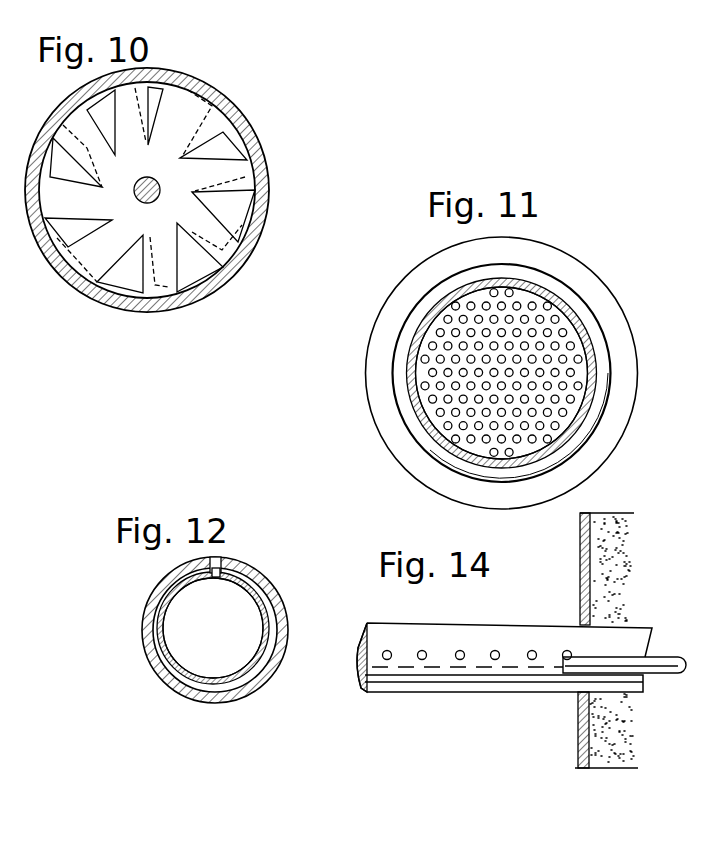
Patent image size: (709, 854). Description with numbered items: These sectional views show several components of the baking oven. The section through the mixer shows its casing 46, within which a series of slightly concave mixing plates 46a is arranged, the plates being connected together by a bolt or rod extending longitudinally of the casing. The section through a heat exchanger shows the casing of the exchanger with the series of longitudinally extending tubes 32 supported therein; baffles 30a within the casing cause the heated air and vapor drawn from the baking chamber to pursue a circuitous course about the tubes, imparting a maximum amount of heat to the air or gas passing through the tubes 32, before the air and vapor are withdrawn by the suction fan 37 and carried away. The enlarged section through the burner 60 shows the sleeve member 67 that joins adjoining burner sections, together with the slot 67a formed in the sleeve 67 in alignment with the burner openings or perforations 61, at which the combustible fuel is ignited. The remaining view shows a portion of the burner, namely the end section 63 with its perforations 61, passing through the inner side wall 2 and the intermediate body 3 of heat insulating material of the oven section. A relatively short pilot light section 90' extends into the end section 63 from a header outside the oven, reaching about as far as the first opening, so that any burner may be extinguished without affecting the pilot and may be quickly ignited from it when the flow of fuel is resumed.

In FIG. 10, the casing 46 is at (128, 306).
In FIG. 10, the mixing plates 46a is at (226, 121).
In FIG. 11, the suction fan 37 is at (363, 355).
In FIG. 11, the tubes 32 is at (551, 308).
In FIG. 11, the baffles 30a is at (420, 339).
In FIG. 12, the sleeve member 67 is at (281, 648).
In FIG. 12, the perforations 61 is at (220, 578).
In FIG. 12, the burner 60 is at (163, 648).
In FIG. 12, the slot 67a is at (221, 561).
In FIG. 14, the inner side wall 2 is at (581, 551).
In FIG. 14, the intermediate body 3 is at (600, 583).
In FIG. 14, the end section 63 is at (462, 637).
In FIG. 14, the pilot light section 90' is at (624, 653).